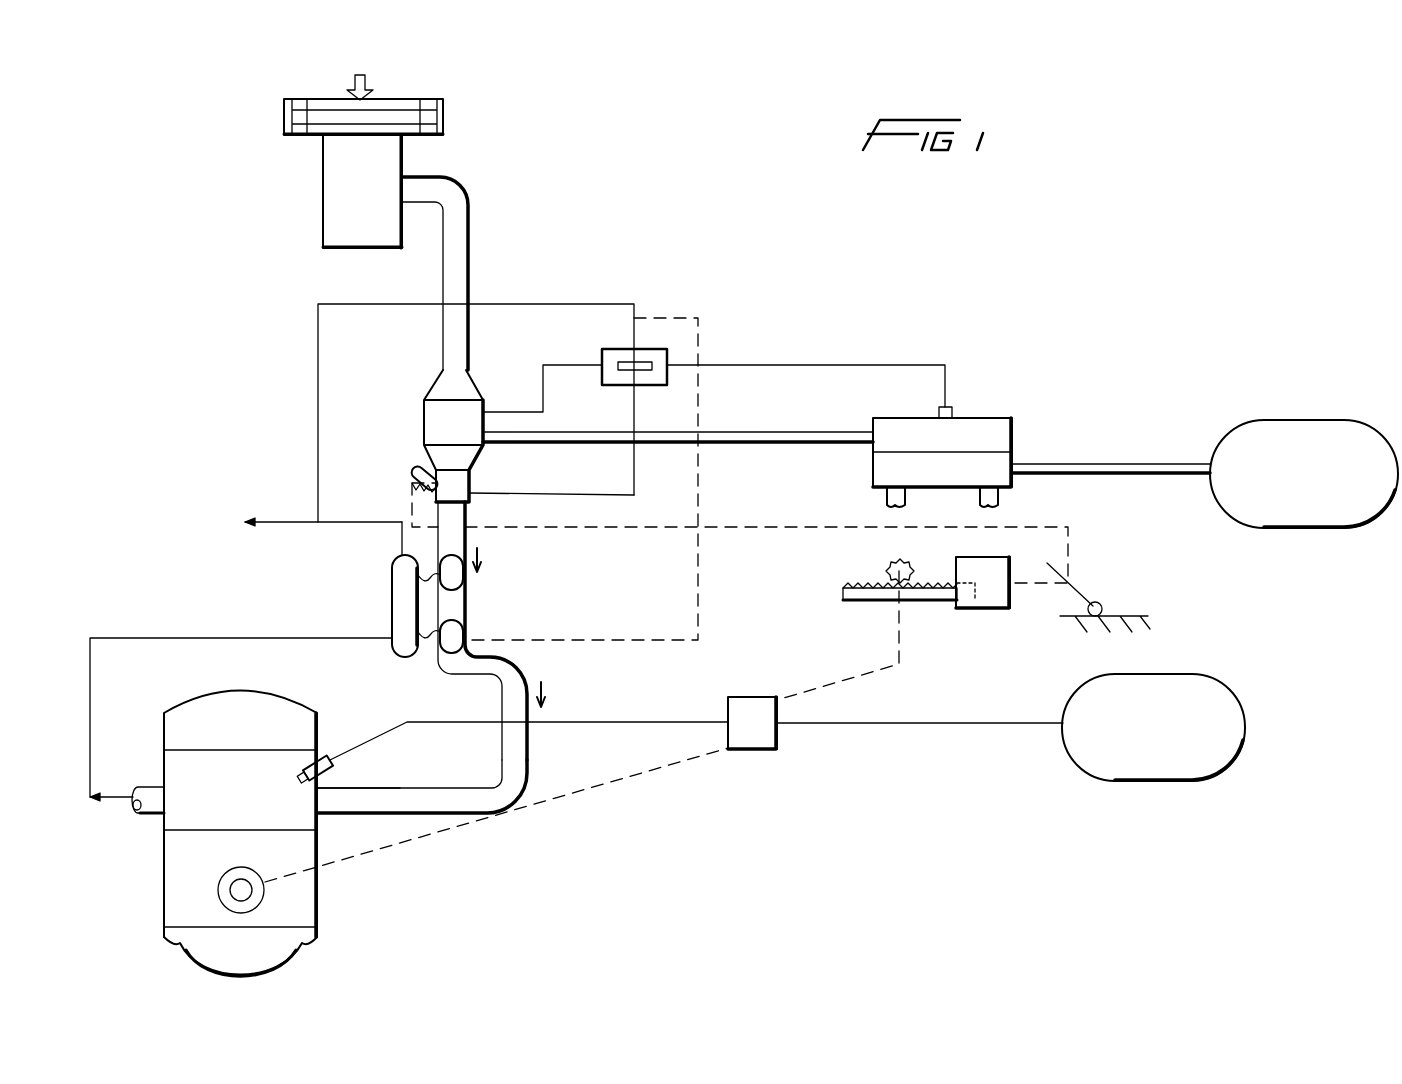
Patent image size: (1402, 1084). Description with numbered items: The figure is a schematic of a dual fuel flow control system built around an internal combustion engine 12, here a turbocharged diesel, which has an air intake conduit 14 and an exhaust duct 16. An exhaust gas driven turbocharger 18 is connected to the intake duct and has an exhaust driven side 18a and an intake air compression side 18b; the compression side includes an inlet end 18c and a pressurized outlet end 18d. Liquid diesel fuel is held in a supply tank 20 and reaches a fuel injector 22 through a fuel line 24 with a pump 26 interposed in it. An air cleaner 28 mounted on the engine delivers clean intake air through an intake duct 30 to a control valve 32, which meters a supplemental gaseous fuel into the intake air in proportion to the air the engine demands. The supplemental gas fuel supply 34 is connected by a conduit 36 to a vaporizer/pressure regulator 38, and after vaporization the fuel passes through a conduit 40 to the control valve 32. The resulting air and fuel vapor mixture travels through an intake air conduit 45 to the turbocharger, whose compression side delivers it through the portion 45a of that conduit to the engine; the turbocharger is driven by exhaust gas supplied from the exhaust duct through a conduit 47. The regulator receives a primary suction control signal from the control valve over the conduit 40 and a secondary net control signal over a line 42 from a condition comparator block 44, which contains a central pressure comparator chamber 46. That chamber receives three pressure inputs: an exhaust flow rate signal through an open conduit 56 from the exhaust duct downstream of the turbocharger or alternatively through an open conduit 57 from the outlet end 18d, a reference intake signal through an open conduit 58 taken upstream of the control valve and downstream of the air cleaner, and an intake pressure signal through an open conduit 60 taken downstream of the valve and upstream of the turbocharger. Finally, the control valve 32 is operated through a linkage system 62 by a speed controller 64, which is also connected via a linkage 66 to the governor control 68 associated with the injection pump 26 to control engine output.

The internal combustion engine 12 is at (198, 860).
The air intake conduit 14 is at (428, 797).
The exhaust duct 16 is at (150, 787).
The turbocharger 18 is at (425, 605).
The exhaust driven side 18a is at (400, 578).
The intake air compression side 18b is at (465, 602).
The inlet end 18c is at (465, 575).
The pressurized outlet end 18d is at (455, 640).
The supply tank 20 is at (1164, 737).
The fuel injector 22 is at (327, 757).
The fuel line 24 is at (975, 722).
The pump 26 is at (766, 737).
The air cleaner 28 is at (447, 118).
The intake duct 30 is at (468, 188).
The control valve 32 is at (464, 439).
The supplemental gas fuel supply 34 is at (1311, 487).
The conduit 36 is at (1130, 466).
The vaporizer/pressure regulator 38 is at (1012, 440).
The conduit 40 is at (800, 432).
The line 42 is at (795, 365).
The condition comparator block 44 is at (620, 349).
The intake air conduit 45 is at (470, 525).
The portion of intake air conduit 45a is at (527, 780).
The central pressure comparator chamber 46 is at (645, 370).
The conduit 47 is at (320, 640).
The open conduit 56 is at (572, 303).
The open conduit 57 is at (698, 604).
The open conduit 58 is at (572, 363).
The open conduit 60 is at (634, 493).
The linkage system 62 is at (413, 483).
The speed controller 64 is at (1085, 595).
The linkage 66 is at (1040, 583).
The governor control 68 is at (930, 600).